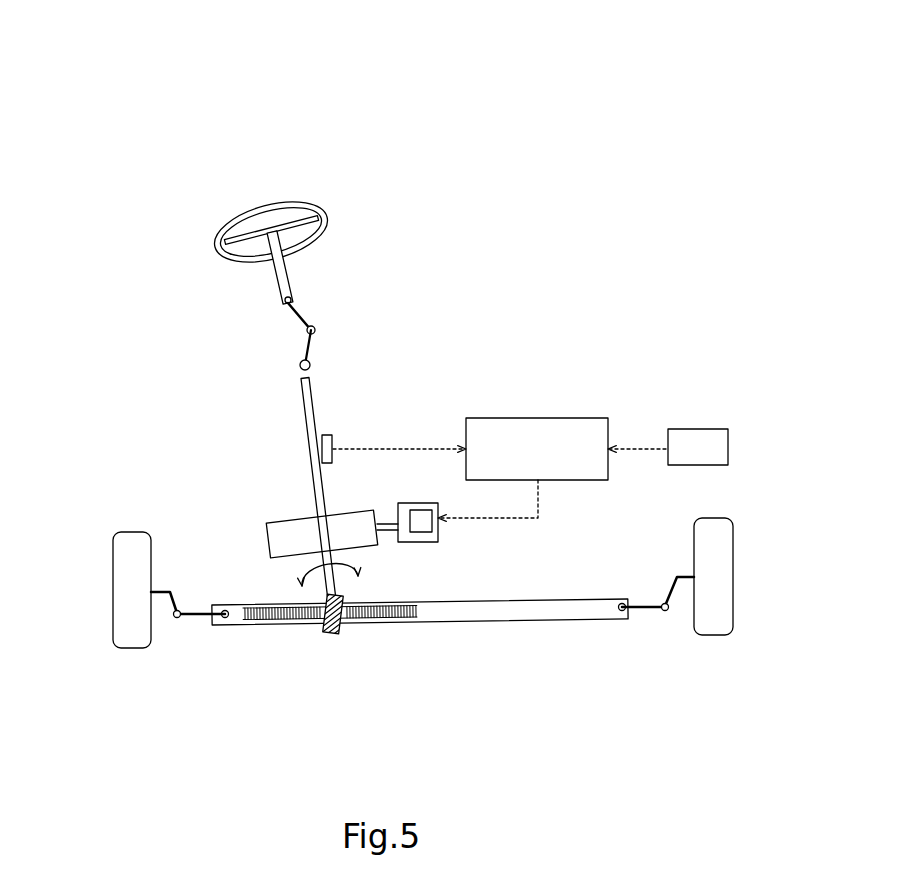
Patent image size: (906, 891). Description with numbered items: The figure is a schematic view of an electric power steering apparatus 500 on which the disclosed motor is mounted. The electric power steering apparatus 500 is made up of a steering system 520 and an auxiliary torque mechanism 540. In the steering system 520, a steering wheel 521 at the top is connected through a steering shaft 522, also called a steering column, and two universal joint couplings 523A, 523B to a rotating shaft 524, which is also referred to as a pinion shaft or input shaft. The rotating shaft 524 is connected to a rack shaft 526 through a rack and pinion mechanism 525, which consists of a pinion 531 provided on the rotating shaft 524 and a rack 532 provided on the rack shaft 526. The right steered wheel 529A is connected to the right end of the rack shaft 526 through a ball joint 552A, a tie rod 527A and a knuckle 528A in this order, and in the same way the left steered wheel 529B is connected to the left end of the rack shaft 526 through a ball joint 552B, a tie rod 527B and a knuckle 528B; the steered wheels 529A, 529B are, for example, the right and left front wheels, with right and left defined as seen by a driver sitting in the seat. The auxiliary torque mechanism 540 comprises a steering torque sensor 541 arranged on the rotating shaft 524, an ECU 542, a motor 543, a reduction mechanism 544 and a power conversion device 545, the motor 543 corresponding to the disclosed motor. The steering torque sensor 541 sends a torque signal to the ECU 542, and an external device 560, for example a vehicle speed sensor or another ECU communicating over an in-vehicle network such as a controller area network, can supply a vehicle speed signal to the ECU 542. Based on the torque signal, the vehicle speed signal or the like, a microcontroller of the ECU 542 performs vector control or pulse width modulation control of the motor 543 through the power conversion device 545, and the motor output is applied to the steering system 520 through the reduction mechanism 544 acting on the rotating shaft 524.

The electric power steering apparatus 500 is at (412, 110).
The steering system 520 is at (262, 382).
The steering wheel 521 is at (250, 206).
The steering shaft 522 is at (292, 278).
The universal joint coupling 523A is at (314, 326).
The universal joint coupling 523B is at (310, 362).
The rotating shaft 524 is at (315, 403).
The rack and pinion mechanism 525 is at (388, 731).
The rack shaft 526 is at (452, 612).
The tie rod 527A is at (200, 612).
The tie rod 527B is at (645, 605).
The knuckle 528A is at (165, 590).
The knuckle 528B is at (685, 575).
The steered wheel 529A is at (132, 640).
The steered wheel 529B is at (713, 620).
The pinion 531 is at (336, 637).
The rack 532 is at (287, 627).
The auxiliary torque mechanism 540 is at (488, 388).
The steering torque sensor 541 is at (333, 445).
The ECU 542 is at (570, 418).
The motor 543 is at (420, 503).
The reduction mechanism 544 is at (282, 522).
The power conversion device 545 is at (422, 530).
The ball joint 552A is at (225, 622).
The ball joint 552B is at (620, 615).
The external device 560 is at (700, 429).